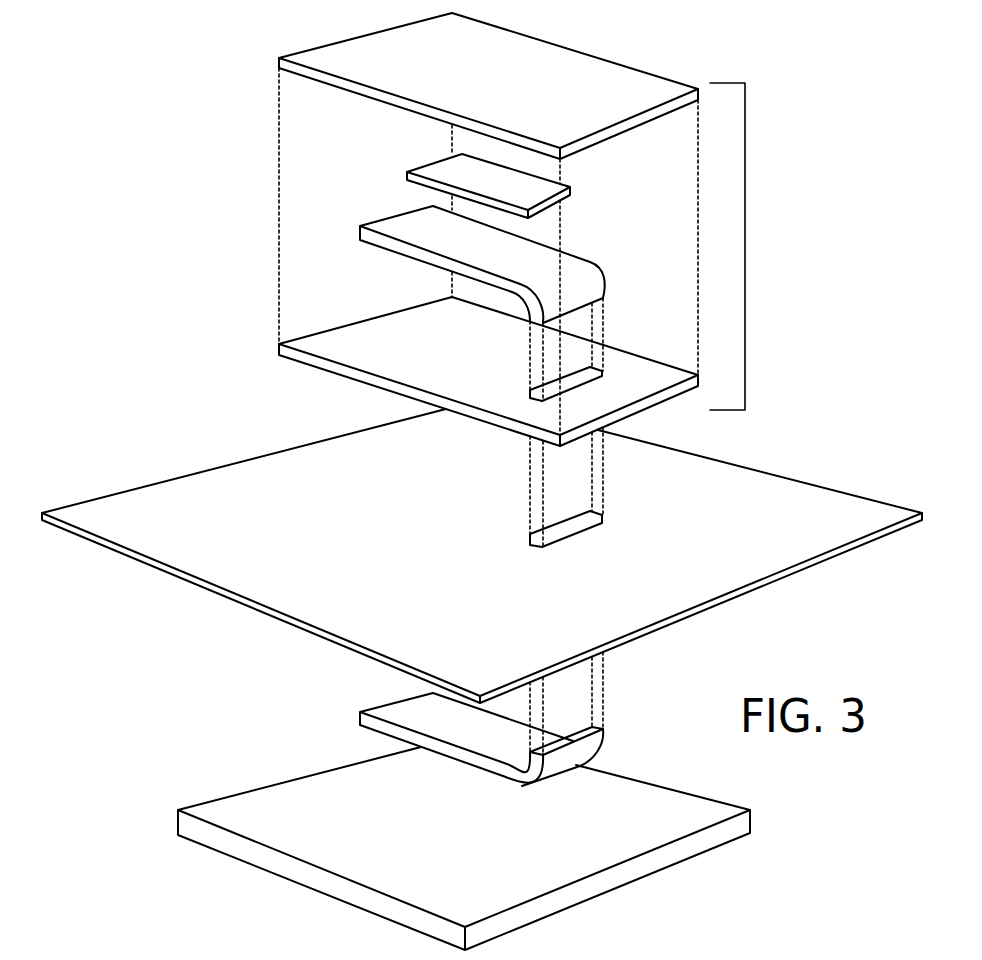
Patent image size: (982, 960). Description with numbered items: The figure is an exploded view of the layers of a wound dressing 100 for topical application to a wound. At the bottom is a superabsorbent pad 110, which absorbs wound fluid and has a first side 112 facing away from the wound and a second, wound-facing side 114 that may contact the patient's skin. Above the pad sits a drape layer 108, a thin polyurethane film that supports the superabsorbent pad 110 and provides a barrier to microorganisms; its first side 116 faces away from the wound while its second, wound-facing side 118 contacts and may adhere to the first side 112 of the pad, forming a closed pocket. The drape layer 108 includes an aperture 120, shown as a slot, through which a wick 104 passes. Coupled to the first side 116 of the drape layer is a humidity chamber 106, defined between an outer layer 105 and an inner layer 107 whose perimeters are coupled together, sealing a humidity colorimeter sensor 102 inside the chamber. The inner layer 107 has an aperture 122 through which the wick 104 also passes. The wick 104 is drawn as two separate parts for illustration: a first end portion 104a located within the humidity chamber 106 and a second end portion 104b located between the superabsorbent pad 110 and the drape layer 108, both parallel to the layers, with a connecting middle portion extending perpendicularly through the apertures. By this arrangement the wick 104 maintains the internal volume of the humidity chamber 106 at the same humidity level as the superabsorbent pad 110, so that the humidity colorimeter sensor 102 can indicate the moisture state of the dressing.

The wound dressing 100 is at (206, 36).
The humidity colorimeter sensor 102 is at (570, 195).
The wick 104 is at (413, 496).
The first end portion 104a is at (580, 277).
The second end portion 104b is at (587, 747).
The outer layer 105 is at (580, 77).
The humidity chamber 106 is at (745, 242).
The inner layer 107 is at (488, 361).
The drape layer 108 is at (482, 556).
The superabsorbent pad 110 is at (464, 848).
The first side 112 is at (290, 800).
The second, wound-facing side 114 is at (262, 872).
The first side 116 is at (757, 490).
The second, wound-facing side 118 is at (763, 587).
The aperture 120 is at (567, 532).
The aperture 122 is at (555, 390).